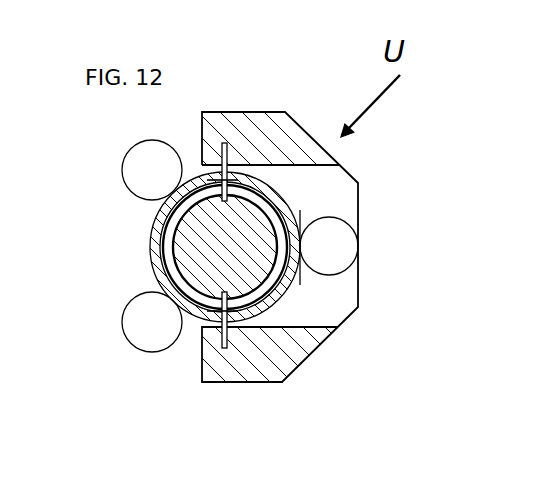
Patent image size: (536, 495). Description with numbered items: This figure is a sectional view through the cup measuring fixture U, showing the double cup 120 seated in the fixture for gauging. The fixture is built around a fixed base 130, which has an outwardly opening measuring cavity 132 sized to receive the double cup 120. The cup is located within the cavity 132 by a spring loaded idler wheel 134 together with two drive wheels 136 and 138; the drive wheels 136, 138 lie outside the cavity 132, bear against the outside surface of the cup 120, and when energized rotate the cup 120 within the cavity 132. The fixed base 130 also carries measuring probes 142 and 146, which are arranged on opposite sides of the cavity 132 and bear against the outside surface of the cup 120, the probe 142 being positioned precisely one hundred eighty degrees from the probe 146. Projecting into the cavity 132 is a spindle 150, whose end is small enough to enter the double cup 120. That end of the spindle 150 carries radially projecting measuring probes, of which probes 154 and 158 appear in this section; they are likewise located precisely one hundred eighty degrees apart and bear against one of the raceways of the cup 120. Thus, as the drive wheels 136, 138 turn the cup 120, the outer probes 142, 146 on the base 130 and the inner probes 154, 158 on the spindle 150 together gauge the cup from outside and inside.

The double cup 120 is at (162, 220).
The fixed base 130 is at (330, 336).
The measuring cavity 132 is at (298, 213).
The spring loaded idler wheel 134 is at (338, 248).
The drive wheel 136 is at (128, 328).
The drive wheel 138 is at (138, 160).
The measuring probe 142 is at (226, 145).
The measuring probe 146 is at (228, 345).
The spindle 150 is at (197, 243).
The measuring probe 154 is at (228, 182).
The measuring probe 158 is at (232, 313).